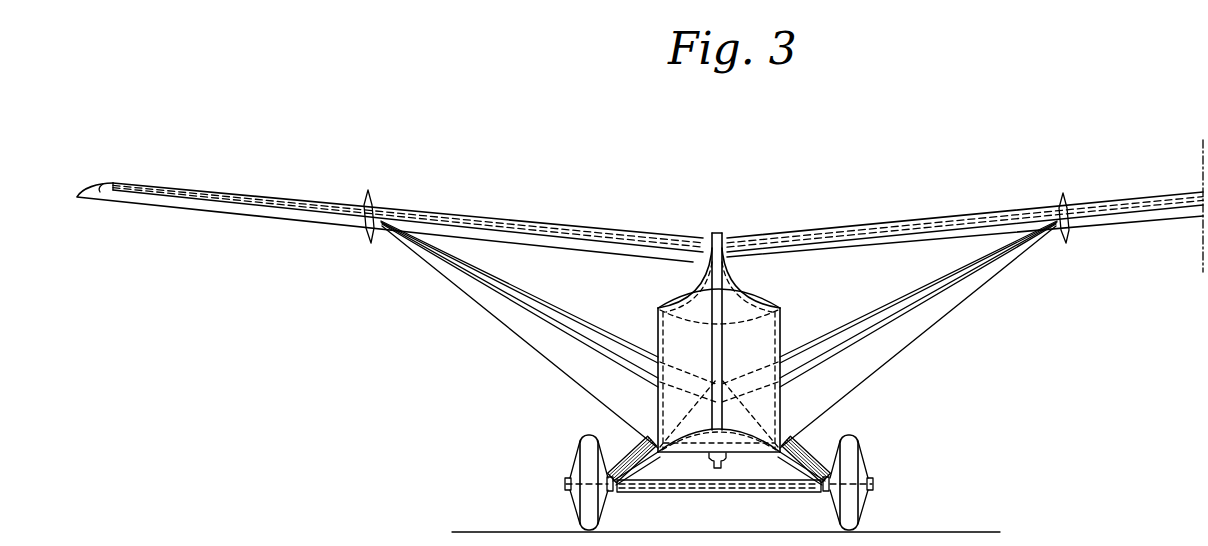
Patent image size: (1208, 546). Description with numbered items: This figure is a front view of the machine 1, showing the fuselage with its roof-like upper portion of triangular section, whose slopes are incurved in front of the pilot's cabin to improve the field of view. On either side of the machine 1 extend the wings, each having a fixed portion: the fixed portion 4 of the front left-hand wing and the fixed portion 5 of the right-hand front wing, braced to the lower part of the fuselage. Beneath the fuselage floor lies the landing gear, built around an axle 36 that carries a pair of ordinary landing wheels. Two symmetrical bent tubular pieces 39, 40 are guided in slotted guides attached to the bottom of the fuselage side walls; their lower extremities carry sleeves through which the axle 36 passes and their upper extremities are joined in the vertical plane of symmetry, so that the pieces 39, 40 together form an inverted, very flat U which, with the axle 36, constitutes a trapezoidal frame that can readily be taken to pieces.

The fuselage body with central pylon 1 is at (768, 330).
The fixed portion of the front left hand wing 4 is at (1172, 206).
The fixed portion of the right hand front wing 5 is at (270, 204).
The axle 36 is at (765, 486).
The tubular piece 39 is at (813, 451).
The tubular piece 40 is at (623, 451).